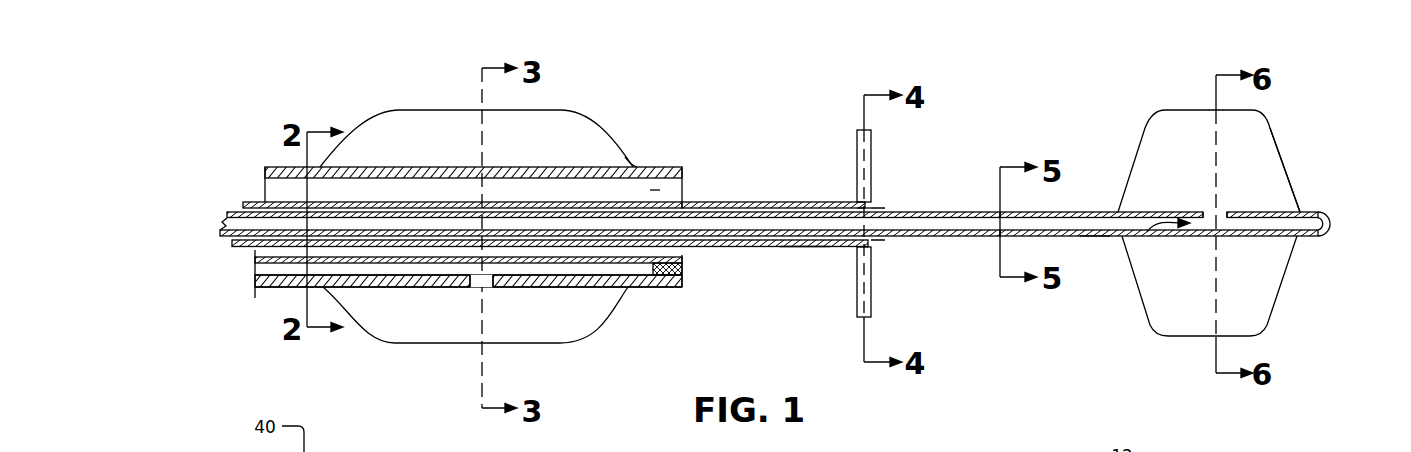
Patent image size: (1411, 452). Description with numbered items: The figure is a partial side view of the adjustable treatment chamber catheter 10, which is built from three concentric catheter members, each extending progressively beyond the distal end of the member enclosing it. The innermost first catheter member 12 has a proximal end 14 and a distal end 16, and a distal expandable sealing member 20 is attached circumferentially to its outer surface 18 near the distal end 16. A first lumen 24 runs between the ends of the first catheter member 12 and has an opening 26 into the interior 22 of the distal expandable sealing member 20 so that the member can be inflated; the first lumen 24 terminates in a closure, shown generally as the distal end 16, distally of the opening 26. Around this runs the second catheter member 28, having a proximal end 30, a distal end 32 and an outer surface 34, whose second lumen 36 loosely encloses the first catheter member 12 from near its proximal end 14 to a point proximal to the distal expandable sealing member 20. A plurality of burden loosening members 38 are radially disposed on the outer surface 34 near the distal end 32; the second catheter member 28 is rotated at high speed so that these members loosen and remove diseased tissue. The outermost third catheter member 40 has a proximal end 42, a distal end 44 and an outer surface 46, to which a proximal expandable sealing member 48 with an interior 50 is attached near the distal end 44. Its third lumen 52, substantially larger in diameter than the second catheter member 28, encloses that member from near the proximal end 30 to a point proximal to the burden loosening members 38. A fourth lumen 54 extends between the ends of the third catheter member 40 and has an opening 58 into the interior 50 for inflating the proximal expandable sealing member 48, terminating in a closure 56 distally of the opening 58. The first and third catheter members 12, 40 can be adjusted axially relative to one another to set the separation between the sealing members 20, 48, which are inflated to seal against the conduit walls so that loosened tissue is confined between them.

The adjustable treatment chamber catheter 10 is at (643, 359).
The first catheter member 12 is at (1098, 207).
The proximal end 14 is at (222, 233).
The distal end 16 is at (1330, 223).
The outer surface 18 is at (1092, 237).
The distal expandable sealing member 20 is at (1275, 138).
The interior 22 is at (1272, 182).
The first lumen 24 is at (1142, 297).
The opening 26 is at (1210, 194).
The second catheter member 28 is at (808, 203).
The proximal end 30 is at (240, 205).
The distal end 32 is at (868, 207).
The outer surface 34 is at (806, 248).
The second lumen 36 is at (880, 208).
The burden loosening members 38 is at (868, 152).
The third catheter member 40 is at (462, 220).
The proximal end 42 is at (258, 171).
The distal end 44 is at (684, 170).
The outer surface 46 is at (637, 165).
The proximal expandable sealing member 48 is at (582, 113).
The interior 50 is at (420, 122).
The third lumen 52 is at (670, 190).
The fourth lumen 54 is at (256, 272).
The closure 56 is at (684, 272).
The opening 58 is at (486, 294).